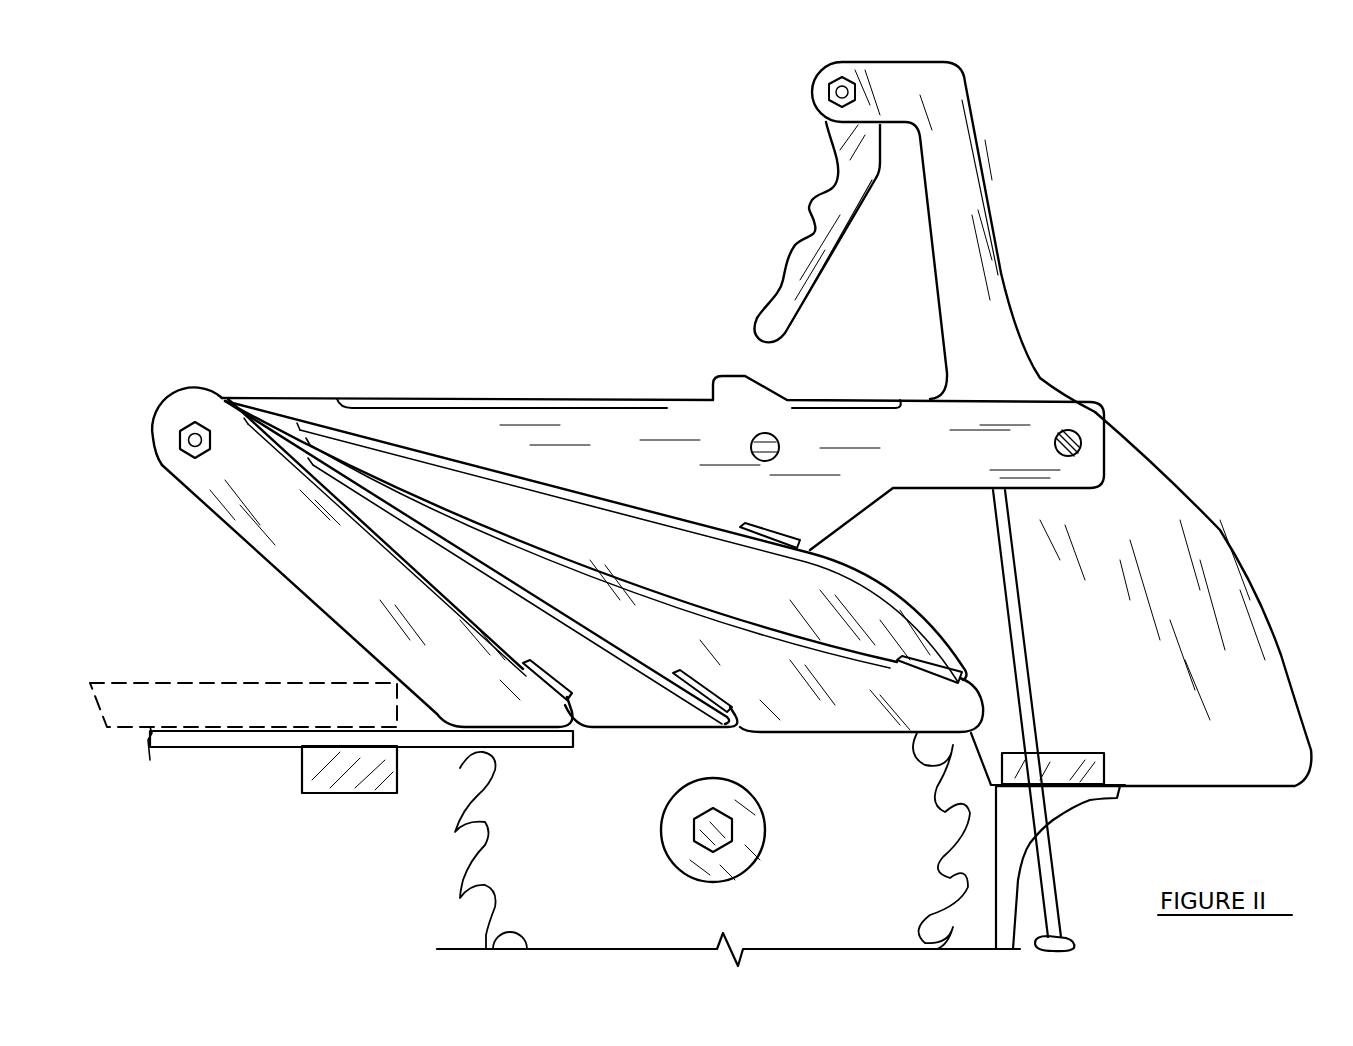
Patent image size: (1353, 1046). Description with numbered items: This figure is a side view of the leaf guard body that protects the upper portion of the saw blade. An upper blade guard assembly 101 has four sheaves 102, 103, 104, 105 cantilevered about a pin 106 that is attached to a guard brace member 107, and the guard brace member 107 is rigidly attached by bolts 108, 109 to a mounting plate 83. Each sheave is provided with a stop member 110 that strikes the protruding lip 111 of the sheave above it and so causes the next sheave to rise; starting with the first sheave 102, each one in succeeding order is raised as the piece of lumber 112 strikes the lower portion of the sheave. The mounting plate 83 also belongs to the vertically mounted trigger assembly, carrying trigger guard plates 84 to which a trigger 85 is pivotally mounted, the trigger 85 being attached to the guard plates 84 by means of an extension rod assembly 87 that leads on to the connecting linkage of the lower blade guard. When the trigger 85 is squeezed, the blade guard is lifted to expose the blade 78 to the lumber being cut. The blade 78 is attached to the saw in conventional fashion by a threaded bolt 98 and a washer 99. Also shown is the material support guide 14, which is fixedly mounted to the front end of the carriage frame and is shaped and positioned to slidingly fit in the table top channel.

The material support guide 14 is at (220, 736).
The blade 78 is at (470, 848).
The mounting plate 83 is at (1215, 525).
The trigger guard plates 84 is at (1000, 292).
The trigger 85 is at (805, 245).
The extension rod assembly 87 is at (1033, 712).
The threaded bolt 98 is at (705, 822).
The washer 99 is at (718, 790).
The upper blade guard assembly 101 is at (455, 378).
The sheave 102 is at (312, 592).
The sheave 103 is at (447, 592).
The sheave 104 is at (620, 647).
The sheave 105 is at (753, 613).
The pin 106 is at (178, 440).
The guard brace member 107 is at (667, 410).
The bolt 108 is at (780, 452).
The bolt 109 is at (1056, 450).
The stop member 110 is at (566, 692).
The protruding lip 111 is at (822, 405).
The piece of lumber 112 is at (137, 695).